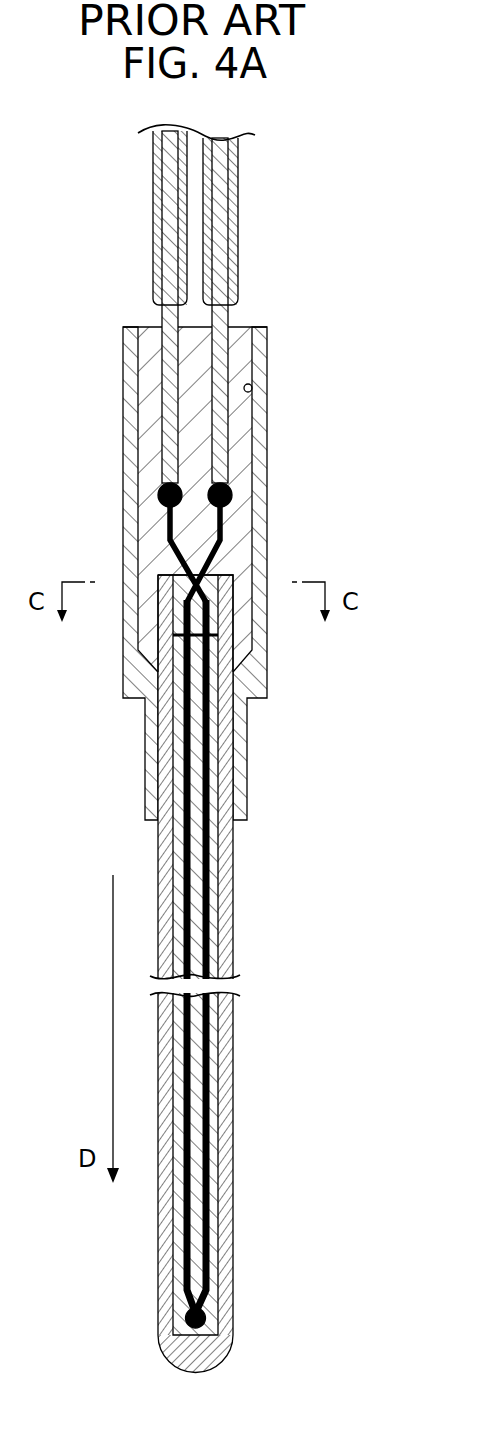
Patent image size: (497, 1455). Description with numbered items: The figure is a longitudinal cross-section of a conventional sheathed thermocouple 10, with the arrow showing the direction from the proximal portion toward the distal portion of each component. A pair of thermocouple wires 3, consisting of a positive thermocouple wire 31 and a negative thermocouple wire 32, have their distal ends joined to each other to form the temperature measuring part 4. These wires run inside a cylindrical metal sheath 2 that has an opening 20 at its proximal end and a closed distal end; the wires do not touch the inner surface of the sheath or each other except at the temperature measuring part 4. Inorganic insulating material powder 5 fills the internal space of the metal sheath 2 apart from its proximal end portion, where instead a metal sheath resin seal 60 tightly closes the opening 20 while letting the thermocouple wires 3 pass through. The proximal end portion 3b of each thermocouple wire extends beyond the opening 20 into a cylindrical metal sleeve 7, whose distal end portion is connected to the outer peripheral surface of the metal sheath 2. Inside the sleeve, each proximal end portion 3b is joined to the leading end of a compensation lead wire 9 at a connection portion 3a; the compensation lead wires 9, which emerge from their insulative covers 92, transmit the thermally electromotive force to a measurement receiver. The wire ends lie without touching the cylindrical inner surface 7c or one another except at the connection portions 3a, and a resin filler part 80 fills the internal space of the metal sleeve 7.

The sheathed thermocouple 10 is at (269, 749).
The insulative covers 92 is at (237, 222).
The compensation lead wires 9 is at (222, 352).
The metal sleeve 7 is at (258, 462).
The cylindrical inner surface 7c is at (252, 388).
The resin filler part 80 is at (243, 430).
The connection portion 3a is at (229, 503).
The proximal end portion 3b is at (217, 542).
The opening 20 is at (222, 575).
The metal sheath resin seal 60 is at (212, 615).
The pair of thermocouple wires 3 is at (272, 956).
The positive thermocouple wire 31 is at (207, 877).
The negative thermocouple wire 32 is at (187, 913).
The metal sheath 2 is at (224, 974).
The inorganic insulating material powder 5 is at (195, 1167).
The temperature measuring part 4 is at (200, 1318).